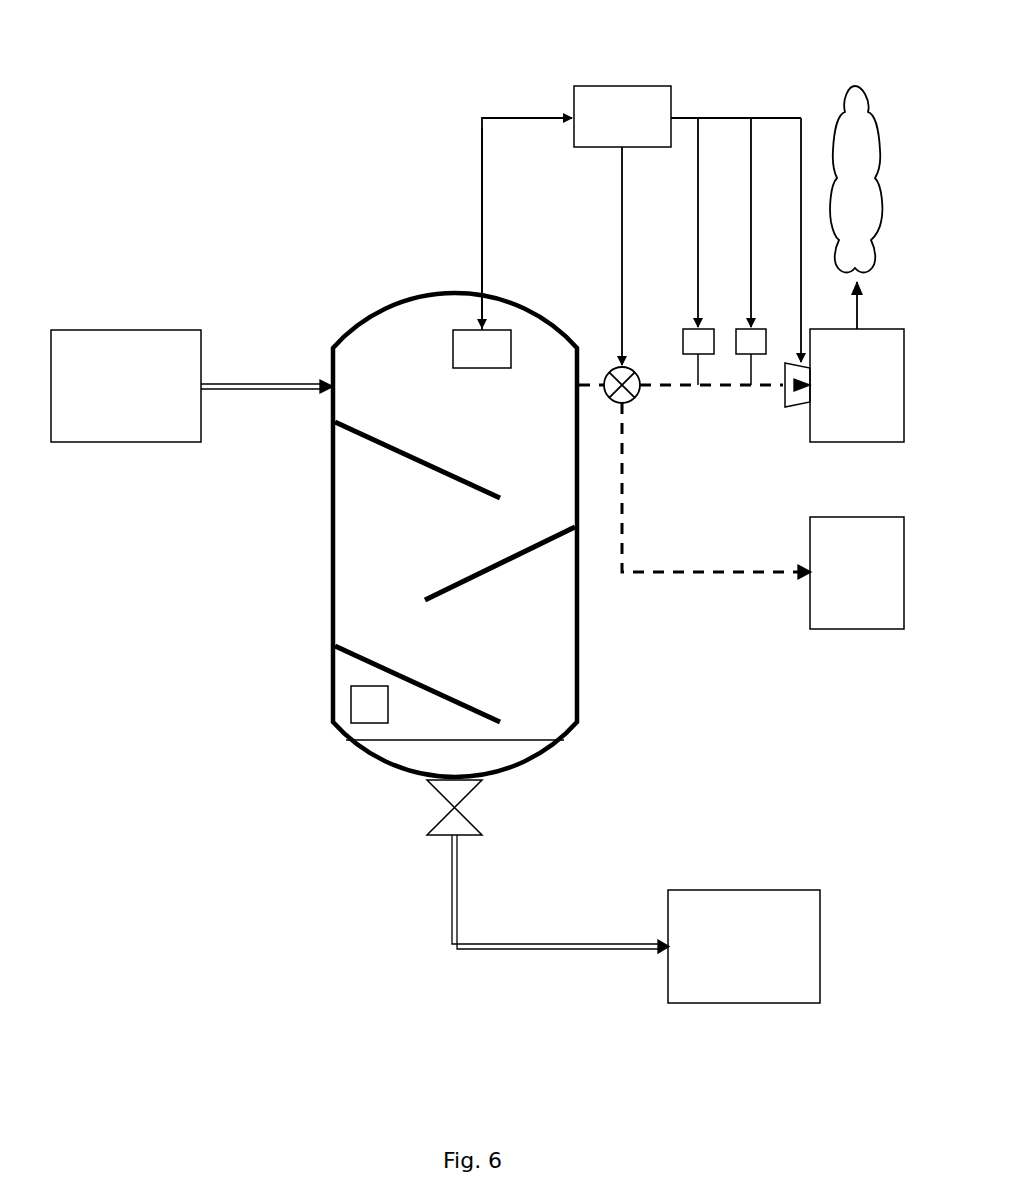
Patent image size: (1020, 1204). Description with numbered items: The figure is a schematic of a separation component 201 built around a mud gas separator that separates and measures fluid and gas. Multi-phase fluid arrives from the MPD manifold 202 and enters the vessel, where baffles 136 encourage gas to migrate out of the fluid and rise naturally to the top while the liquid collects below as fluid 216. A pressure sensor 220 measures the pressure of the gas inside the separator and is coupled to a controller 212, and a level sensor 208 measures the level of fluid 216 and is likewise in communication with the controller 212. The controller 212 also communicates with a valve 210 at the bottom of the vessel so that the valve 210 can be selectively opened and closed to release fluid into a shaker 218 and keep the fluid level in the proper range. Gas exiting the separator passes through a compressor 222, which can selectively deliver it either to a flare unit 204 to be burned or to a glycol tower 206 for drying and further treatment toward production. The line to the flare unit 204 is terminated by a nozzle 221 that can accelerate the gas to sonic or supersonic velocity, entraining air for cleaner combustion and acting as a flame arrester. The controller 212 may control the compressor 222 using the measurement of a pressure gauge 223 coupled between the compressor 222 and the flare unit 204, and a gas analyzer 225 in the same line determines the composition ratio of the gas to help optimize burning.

The separation component 201 is at (378, 86).
The MPD manifold 202 is at (185, 330).
The flare unit 204 is at (880, 329).
The glycol tower 206 is at (855, 629).
The level sensor 208 is at (351, 706).
The valve 210 is at (440, 795).
The controller 212 is at (671, 113).
The fluid 216 is at (495, 755).
The shaker 218 is at (767, 890).
The pressure sensor 220 is at (473, 330).
The nozzle 221 is at (795, 410).
The compressor 222 is at (621, 366).
The pressure gauge 223 is at (766, 340).
The gas analyzer 225 is at (683, 342).
The baffles 136 is at (455, 470).